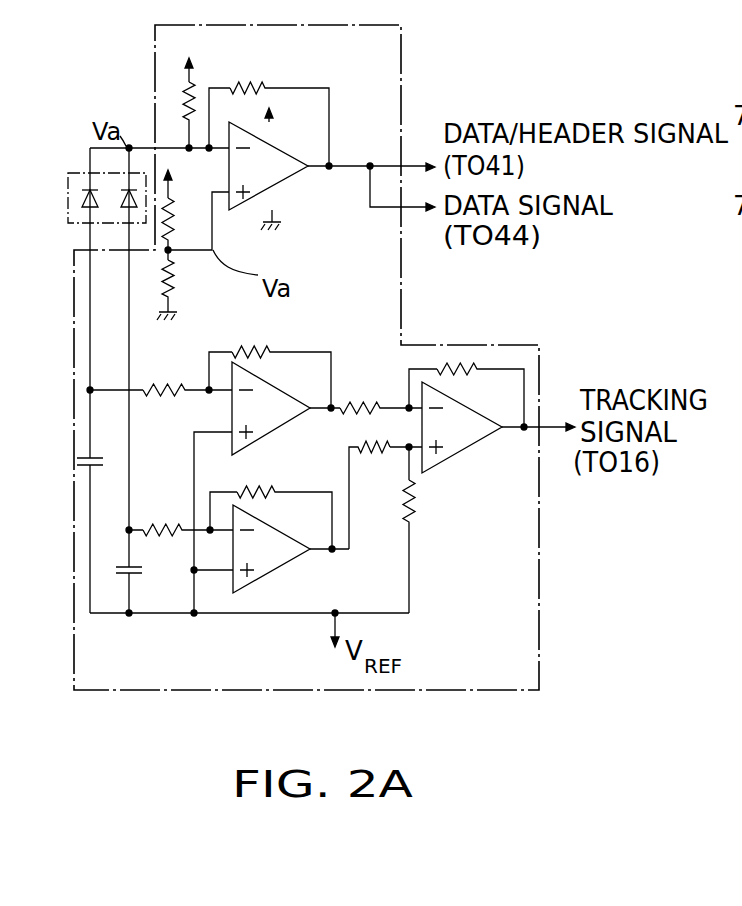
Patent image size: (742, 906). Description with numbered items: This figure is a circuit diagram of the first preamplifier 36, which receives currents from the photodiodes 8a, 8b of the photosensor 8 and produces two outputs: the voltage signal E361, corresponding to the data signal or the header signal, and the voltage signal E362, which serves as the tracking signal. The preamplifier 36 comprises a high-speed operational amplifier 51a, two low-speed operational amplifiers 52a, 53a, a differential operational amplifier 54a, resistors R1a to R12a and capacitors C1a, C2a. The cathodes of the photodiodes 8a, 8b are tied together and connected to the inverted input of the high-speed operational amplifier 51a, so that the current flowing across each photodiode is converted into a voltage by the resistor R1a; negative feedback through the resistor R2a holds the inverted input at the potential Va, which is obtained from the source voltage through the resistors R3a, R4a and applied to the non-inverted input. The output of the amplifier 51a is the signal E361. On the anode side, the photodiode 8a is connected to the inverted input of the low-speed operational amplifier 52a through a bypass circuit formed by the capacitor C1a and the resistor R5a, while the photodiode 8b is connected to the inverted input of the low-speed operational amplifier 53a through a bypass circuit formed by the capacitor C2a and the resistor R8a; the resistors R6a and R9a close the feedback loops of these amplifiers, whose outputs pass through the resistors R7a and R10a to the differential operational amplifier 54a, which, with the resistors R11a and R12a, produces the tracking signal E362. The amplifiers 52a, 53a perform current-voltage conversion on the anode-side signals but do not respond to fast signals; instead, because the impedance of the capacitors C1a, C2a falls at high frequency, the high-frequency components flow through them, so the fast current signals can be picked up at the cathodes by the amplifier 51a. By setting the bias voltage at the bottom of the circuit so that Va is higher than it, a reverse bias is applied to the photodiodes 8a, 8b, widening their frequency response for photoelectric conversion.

The photosensor 8 is at (78, 172).
The photodiode 8a is at (84, 208).
The photodiode 8b is at (126, 225).
The preamplifier 36 is at (402, 52).
The resistor R1a is at (183, 99).
The resistor R2a is at (250, 85).
The resistor R3a is at (179, 227).
The resistor R4a is at (176, 283).
The resistor R5a is at (168, 388).
The resistor R6a is at (261, 350).
The resistor R7a is at (363, 403).
The resistor R8a is at (161, 527).
The resistor R9a is at (270, 488).
The resistor R10a is at (390, 445).
The resistor R11a is at (410, 501).
The resistor R12a is at (455, 364).
The capacitor C1a is at (106, 455).
The capacitor C2a is at (143, 568).
The high-speed operational amplifier 51a is at (293, 176).
The low-speed operational amplifier 52a is at (285, 423).
The low-speed operational amplifier 53a is at (291, 559).
The differential operational amplifier 54a is at (472, 444).
The voltage signal E361 is at (368, 166).
The voltage signal E362 is at (530, 433).